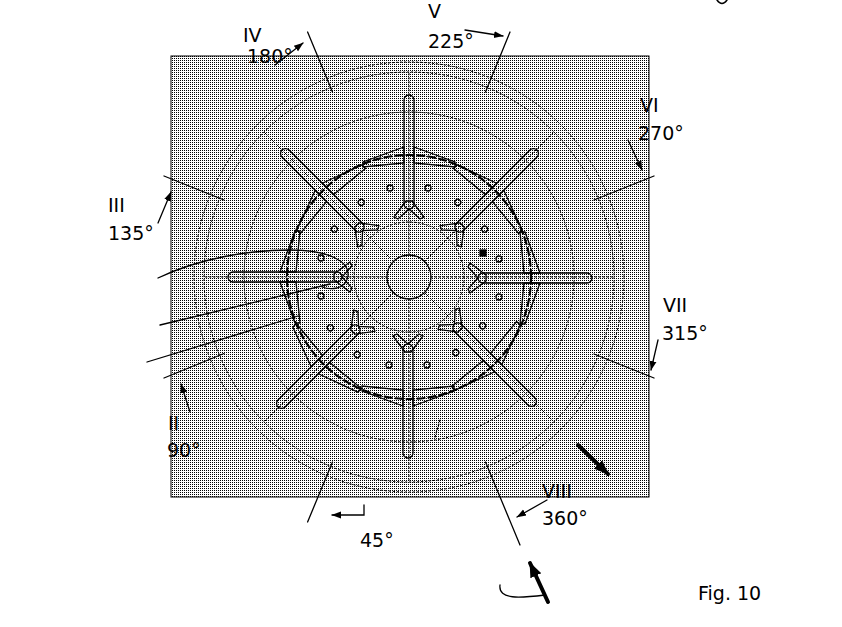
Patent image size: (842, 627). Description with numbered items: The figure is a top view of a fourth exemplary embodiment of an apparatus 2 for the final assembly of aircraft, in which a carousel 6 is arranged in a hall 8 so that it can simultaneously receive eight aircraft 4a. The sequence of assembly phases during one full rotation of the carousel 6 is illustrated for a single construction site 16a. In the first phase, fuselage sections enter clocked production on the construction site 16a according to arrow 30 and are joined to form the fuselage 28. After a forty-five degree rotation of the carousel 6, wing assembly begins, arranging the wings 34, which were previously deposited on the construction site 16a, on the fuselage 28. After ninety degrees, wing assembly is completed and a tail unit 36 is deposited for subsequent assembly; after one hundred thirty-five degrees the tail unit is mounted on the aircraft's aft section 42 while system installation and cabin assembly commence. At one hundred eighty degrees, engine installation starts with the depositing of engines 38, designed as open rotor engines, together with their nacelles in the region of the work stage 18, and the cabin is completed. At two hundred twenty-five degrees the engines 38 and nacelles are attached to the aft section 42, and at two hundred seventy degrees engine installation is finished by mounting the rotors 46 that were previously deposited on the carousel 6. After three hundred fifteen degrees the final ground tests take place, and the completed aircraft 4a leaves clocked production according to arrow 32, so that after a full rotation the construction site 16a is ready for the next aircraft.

The apparatus 2 is at (87, 23).
The aircraft 4a is at (546, 374).
The carousel 6 is at (214, 167).
The hall 8 is at (229, 130).
The construction site 16a is at (435, 437).
The work stage 18 is at (366, 155).
The fuselage 28 is at (408, 460).
The arrow 30 is at (516, 580).
The arrow 32 is at (600, 453).
The wings 34 is at (292, 507).
The tail unit 36 is at (236, 277).
The engines 38 is at (390, 158).
The aircraft's aft section 42 is at (298, 200).
The rotors 46 is at (490, 253).